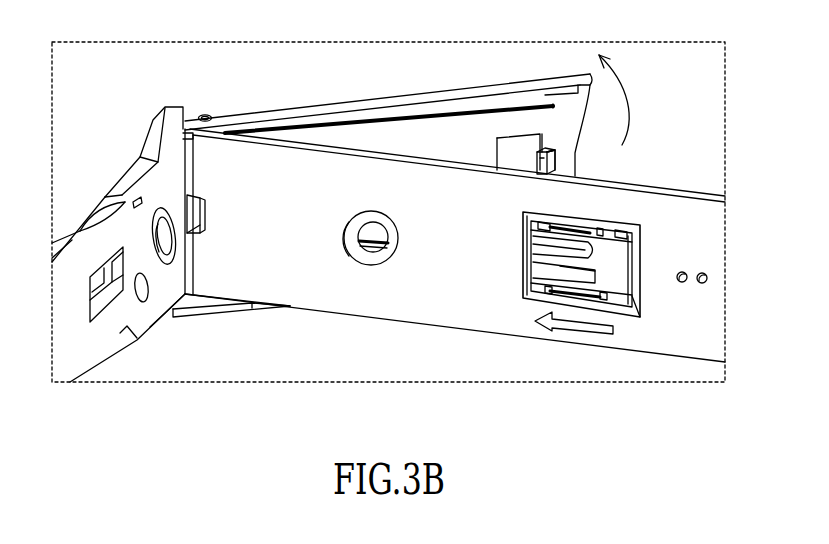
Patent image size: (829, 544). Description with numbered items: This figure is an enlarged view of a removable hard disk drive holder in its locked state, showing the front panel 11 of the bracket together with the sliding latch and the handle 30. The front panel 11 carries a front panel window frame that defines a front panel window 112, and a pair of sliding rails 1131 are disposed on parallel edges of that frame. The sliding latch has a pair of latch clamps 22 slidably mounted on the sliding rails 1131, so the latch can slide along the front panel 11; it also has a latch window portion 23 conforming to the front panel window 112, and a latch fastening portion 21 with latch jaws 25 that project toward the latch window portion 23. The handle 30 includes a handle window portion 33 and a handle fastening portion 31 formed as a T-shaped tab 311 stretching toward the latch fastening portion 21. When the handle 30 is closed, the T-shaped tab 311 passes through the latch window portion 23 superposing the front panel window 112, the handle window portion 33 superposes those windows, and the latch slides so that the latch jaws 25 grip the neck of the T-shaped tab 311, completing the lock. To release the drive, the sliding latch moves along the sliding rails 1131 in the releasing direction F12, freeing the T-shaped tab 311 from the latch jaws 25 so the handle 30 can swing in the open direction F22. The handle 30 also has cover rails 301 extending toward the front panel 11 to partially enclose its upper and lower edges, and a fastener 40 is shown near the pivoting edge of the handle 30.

The front panel 11 is at (645, 210).
The front panel window 112 is at (643, 240).
The sliding rail 1131 is at (643, 297).
The latch fastening portion 21 is at (570, 429).
The latch clamps 22 is at (533, 295).
The latch window portion 23 is at (612, 268).
The latch jaws 25 is at (547, 226).
The handle 30 is at (250, 108).
The cover rails 301 is at (307, 110).
The handle fastening portion 31 is at (500, 227).
The T-shaped tab 311 is at (537, 160).
The handle window portion 33 is at (497, 145).
The pivot screw 40 is at (205, 115).
The releasing direction F12 is at (595, 328).
The open direction F22 is at (632, 100).